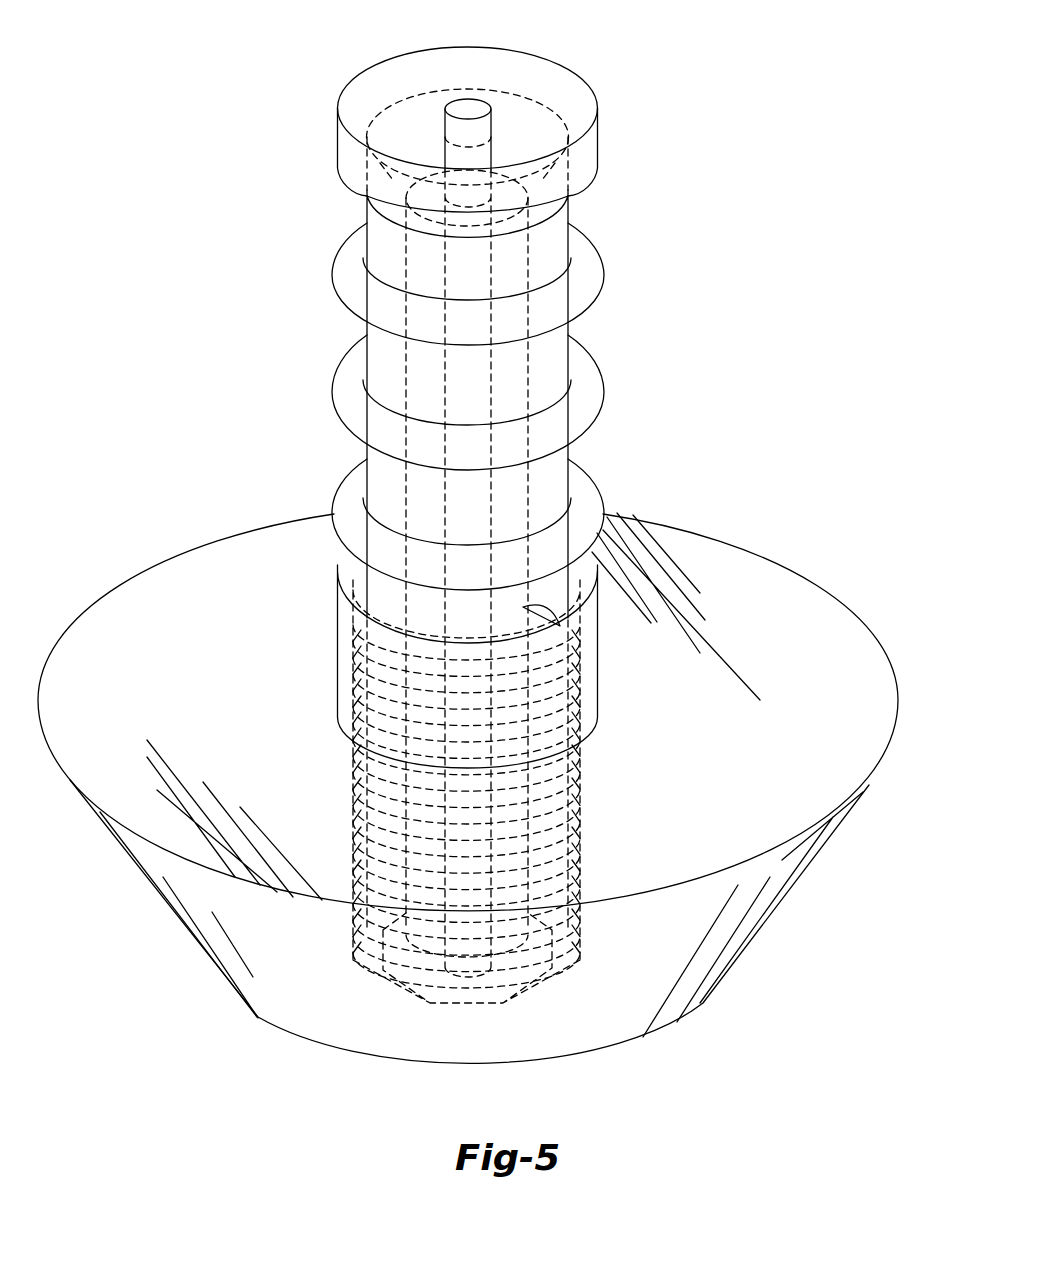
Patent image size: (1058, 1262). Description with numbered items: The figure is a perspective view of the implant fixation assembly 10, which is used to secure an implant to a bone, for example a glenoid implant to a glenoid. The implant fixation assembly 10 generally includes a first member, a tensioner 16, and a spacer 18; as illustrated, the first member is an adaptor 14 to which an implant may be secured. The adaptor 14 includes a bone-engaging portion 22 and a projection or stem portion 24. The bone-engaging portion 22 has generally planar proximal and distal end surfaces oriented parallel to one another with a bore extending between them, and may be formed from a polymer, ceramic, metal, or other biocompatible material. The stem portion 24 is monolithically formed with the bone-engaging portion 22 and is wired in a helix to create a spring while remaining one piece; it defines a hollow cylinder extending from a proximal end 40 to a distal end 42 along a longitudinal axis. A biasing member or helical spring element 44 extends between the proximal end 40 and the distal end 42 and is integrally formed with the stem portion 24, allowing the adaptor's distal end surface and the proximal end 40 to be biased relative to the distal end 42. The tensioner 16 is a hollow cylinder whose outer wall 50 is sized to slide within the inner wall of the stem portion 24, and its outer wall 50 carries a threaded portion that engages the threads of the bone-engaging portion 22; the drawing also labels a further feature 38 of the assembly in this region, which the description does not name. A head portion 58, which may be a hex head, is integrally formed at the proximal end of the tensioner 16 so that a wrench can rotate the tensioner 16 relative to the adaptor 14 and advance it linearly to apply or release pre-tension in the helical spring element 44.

The implant fixation assembly 10 is at (636, 70).
The adaptor 14 is at (190, 478).
The tensioner 16 is at (388, 252).
The spacer 18 is at (512, 365).
The bone-engaging portion 22 is at (137, 592).
The stem portion 24 is at (341, 686).
The collar 38 is at (337, 604).
The proximal end 40 is at (588, 730).
The distal end 42 is at (361, 103).
The helical spring element 44 is at (594, 394).
The outer wall 50 is at (361, 361).
The head portion 58 is at (467, 1005).